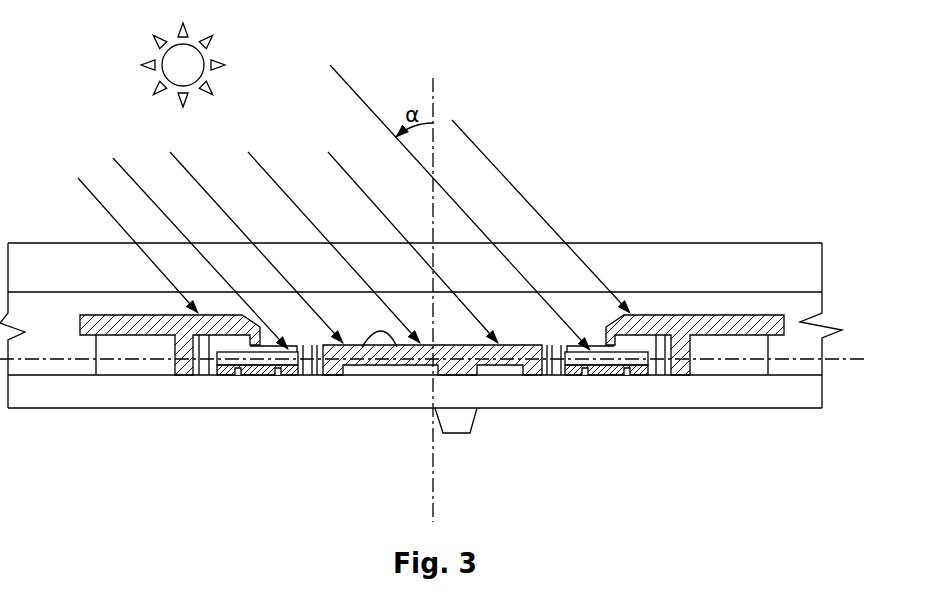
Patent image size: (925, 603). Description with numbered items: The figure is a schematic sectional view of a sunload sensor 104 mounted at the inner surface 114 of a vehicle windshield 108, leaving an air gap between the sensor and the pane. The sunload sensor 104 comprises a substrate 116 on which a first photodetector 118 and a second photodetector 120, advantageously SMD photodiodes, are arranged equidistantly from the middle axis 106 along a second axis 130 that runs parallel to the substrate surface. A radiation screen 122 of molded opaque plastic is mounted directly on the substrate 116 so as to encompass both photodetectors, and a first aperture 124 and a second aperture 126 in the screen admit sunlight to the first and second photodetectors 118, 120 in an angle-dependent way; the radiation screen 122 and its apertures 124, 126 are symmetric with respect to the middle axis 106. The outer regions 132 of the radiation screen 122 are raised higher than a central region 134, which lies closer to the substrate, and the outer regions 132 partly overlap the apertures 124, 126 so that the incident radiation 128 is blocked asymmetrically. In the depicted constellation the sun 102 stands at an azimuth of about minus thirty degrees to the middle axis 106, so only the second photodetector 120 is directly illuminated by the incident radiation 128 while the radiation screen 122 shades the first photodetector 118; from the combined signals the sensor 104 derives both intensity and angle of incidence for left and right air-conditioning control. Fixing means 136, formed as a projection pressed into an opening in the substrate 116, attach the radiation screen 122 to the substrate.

The sun 102 is at (192, 60).
The sunload sensor 104 is at (421, 348).
The middle axis 106 is at (433, 480).
The windshield 108 is at (707, 257).
The inner surface 114 is at (68, 297).
The substrate 116 is at (747, 388).
The first photodetector 118 is at (253, 376).
The second photodetector 120 is at (608, 368).
The radiation screen 122 is at (90, 323).
The first aperture 124 is at (313, 376).
The second aperture 126 is at (573, 348).
The incident radiation 128 is at (502, 172).
The second axis 130 is at (842, 358).
The outer regions 132 is at (108, 313).
The central region 134 is at (365, 348).
The fixing means 136 is at (478, 418).